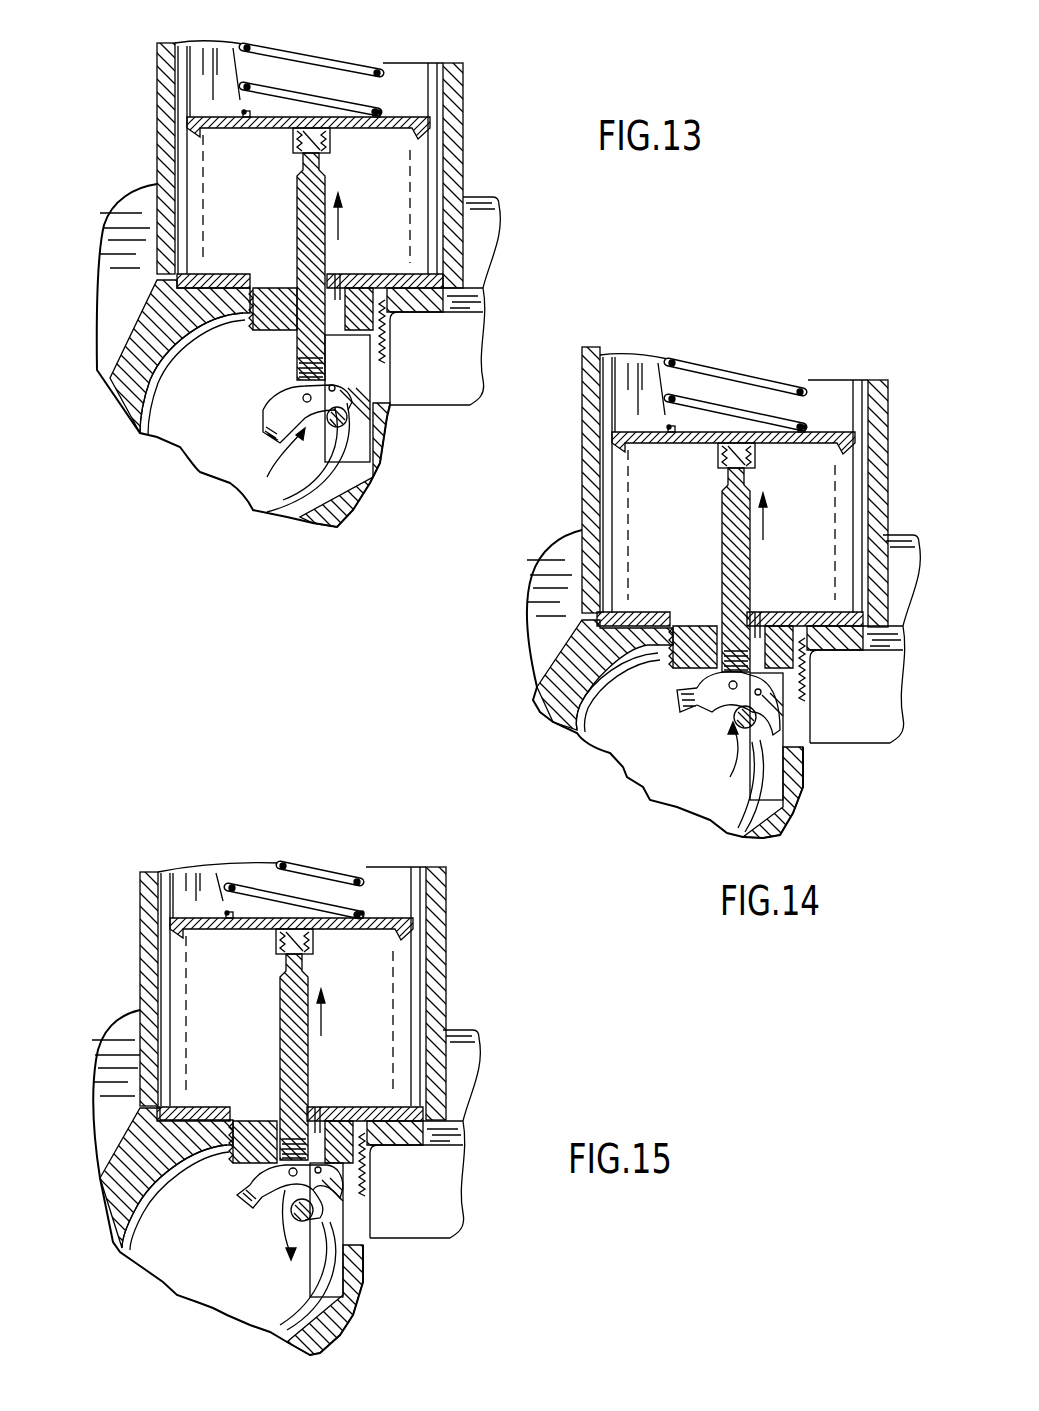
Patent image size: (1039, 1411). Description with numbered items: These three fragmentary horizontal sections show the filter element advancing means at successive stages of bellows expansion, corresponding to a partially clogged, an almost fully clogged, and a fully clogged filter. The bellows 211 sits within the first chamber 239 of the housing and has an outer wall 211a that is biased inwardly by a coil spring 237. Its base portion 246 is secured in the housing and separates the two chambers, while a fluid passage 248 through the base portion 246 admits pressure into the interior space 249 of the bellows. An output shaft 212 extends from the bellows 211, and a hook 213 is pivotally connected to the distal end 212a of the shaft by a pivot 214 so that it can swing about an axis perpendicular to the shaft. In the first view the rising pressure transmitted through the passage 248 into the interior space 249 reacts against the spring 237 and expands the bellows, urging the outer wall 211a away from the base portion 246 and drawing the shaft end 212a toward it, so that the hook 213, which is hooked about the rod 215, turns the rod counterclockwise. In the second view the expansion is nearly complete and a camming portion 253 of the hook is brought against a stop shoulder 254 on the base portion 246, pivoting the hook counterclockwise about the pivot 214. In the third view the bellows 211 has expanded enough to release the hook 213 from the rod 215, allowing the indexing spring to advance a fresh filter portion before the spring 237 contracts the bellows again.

In FIG. 13, the bellows 211 is at (455, 213).
In FIG. 14, the bellows 211 is at (777, 487).
In FIG. 15, the bellows 211 is at (346, 993).
In FIG. 13, the outer wall 211a is at (215, 115).
In FIG. 14, the outer wall 211a is at (727, 371).
In FIG. 15, the outer wall 211a is at (260, 876).
In FIG. 13, the output shaft 212 is at (318, 342).
In FIG. 14, the output shaft 212 is at (846, 570).
In FIG. 15, the output shaft 212 is at (414, 1057).
In FIG. 13, the distal end of shaft 212a is at (335, 147).
In FIG. 14, the distal end of shaft 212a is at (844, 448).
In FIG. 15, the distal end of shaft 212a is at (415, 937).
In FIG. 13, the hook 213 is at (355, 395).
In FIG. 14, the hook 213 is at (800, 750).
In FIG. 15, the hook 213 is at (345, 1200).
In FIG. 13, the pivot 214 is at (303, 396).
In FIG. 14, the pivot 214 is at (731, 693).
In FIG. 15, the pivot 214 is at (292, 1176).
In FIG. 13, the rod 215 is at (348, 422).
In FIG. 14, the rod 215 is at (760, 718).
In FIG. 15, the rod 215 is at (322, 1204).
In FIG. 13, the coil spring 237 is at (385, 65).
In FIG. 14, the coil spring 237 is at (743, 364).
In FIG. 15, the coil spring 237 is at (308, 857).
In FIG. 13, the first chamber 239 is at (410, 95).
In FIG. 14, the first chamber 239 is at (754, 463).
In FIG. 15, the first chamber 239 is at (322, 969).
In FIG. 13, the base portion 246 is at (282, 280).
In FIG. 14, the base portion 246 is at (730, 605).
In FIG. 15, the base portion 246 is at (290, 1093).
In FIG. 13, the fluid passage 248 is at (338, 280).
In FIG. 14, the fluid passage 248 is at (789, 604).
In FIG. 15, the fluid passage 248 is at (349, 1095).
In FIG. 13, the interior space 249 is at (228, 191).
In FIG. 14, the interior space 249 is at (731, 525).
In FIG. 15, the interior space 249 is at (289, 1015).
In FIG. 13, the camming portion 253 is at (283, 413).
In FIG. 14, the camming portion 253 is at (690, 733).
In FIG. 15, the camming portion 253 is at (277, 1178).
In FIG. 13, the stop shoulder 254 is at (283, 330).
In FIG. 14, the stop shoulder 254 is at (677, 690).
In FIG. 15, the stop shoulder 254 is at (240, 1190).